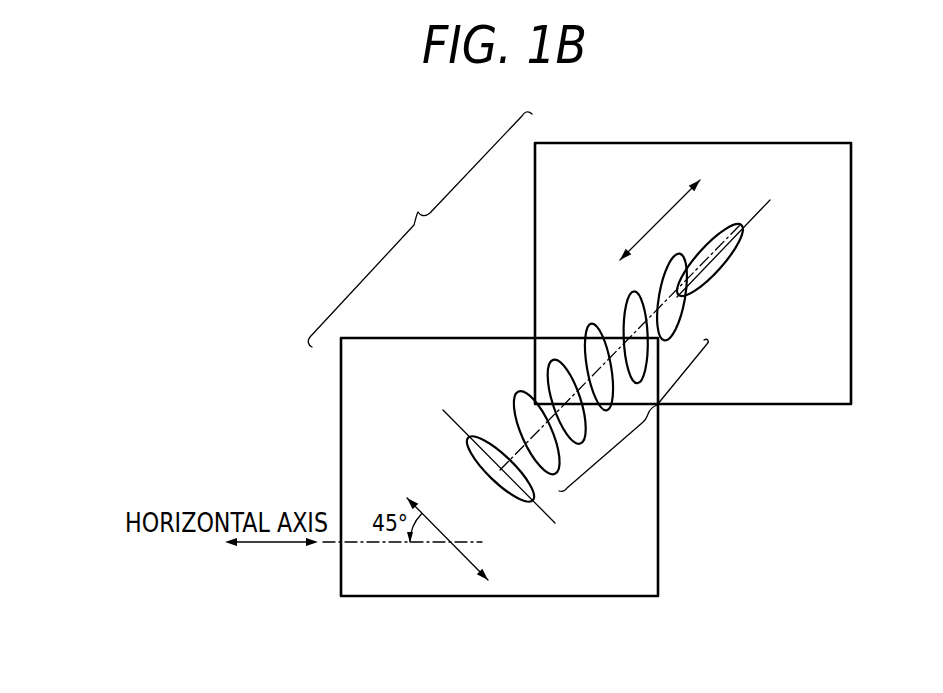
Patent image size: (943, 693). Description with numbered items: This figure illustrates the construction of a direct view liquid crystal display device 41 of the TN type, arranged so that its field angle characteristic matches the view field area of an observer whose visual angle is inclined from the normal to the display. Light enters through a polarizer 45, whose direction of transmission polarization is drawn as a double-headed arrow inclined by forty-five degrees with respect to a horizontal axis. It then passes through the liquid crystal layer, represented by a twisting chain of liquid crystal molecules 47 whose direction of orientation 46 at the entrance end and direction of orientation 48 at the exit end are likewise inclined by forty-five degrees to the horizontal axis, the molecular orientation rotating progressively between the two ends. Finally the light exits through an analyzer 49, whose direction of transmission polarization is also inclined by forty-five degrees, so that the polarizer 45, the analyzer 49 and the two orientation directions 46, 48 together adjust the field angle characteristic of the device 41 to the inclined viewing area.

The direct view liquid crystal display device 41 is at (420, 229).
The polarizer 45 is at (460, 553).
The direction of orientation 46 is at (555, 523).
The liquid crystal molecules 47 is at (650, 417).
The direction of orientation 48 is at (760, 207).
The analyzer 49 is at (653, 227).